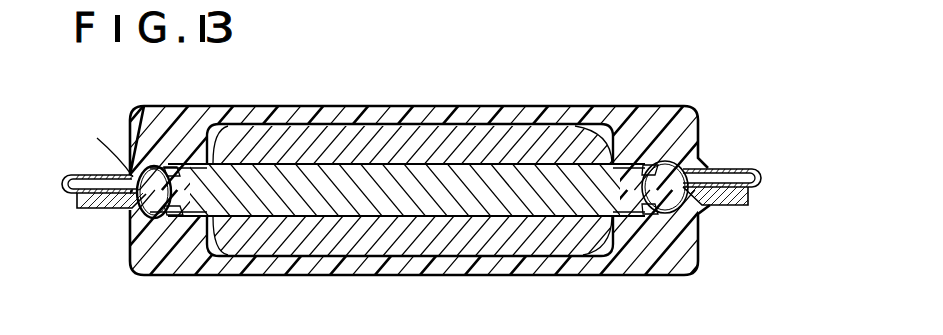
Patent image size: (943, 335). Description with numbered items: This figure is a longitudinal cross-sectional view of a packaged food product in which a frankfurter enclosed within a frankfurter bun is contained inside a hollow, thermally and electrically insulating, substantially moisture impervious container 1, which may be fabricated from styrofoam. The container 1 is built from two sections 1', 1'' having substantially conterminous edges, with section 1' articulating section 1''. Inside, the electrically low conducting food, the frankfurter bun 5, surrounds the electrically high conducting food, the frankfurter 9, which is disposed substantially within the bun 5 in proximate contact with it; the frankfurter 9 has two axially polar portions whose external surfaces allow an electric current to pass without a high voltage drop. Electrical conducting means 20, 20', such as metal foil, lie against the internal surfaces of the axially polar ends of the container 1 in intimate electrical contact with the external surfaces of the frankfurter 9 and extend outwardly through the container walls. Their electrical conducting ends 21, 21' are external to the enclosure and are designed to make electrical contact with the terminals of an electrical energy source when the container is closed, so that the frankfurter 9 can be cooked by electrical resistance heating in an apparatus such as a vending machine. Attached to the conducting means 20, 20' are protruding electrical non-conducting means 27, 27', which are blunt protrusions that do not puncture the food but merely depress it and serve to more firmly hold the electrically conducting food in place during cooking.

The container 1 is at (405, 151).
The container section 1' is at (410, 115).
The container section 1'' is at (413, 262).
The frankfurter bun 5 is at (481, 138).
The frankfurter 9 is at (373, 180).
The electrical conducting means 20 is at (178, 141).
The electrical conducting means 20' is at (691, 214).
The electrical conducting end 21 is at (83, 200).
The electrical conducting end 21' is at (744, 178).
The protruding electrical non-conducting means 27 is at (116, 220).
The protruding electrical non-conducting means 27' is at (700, 160).